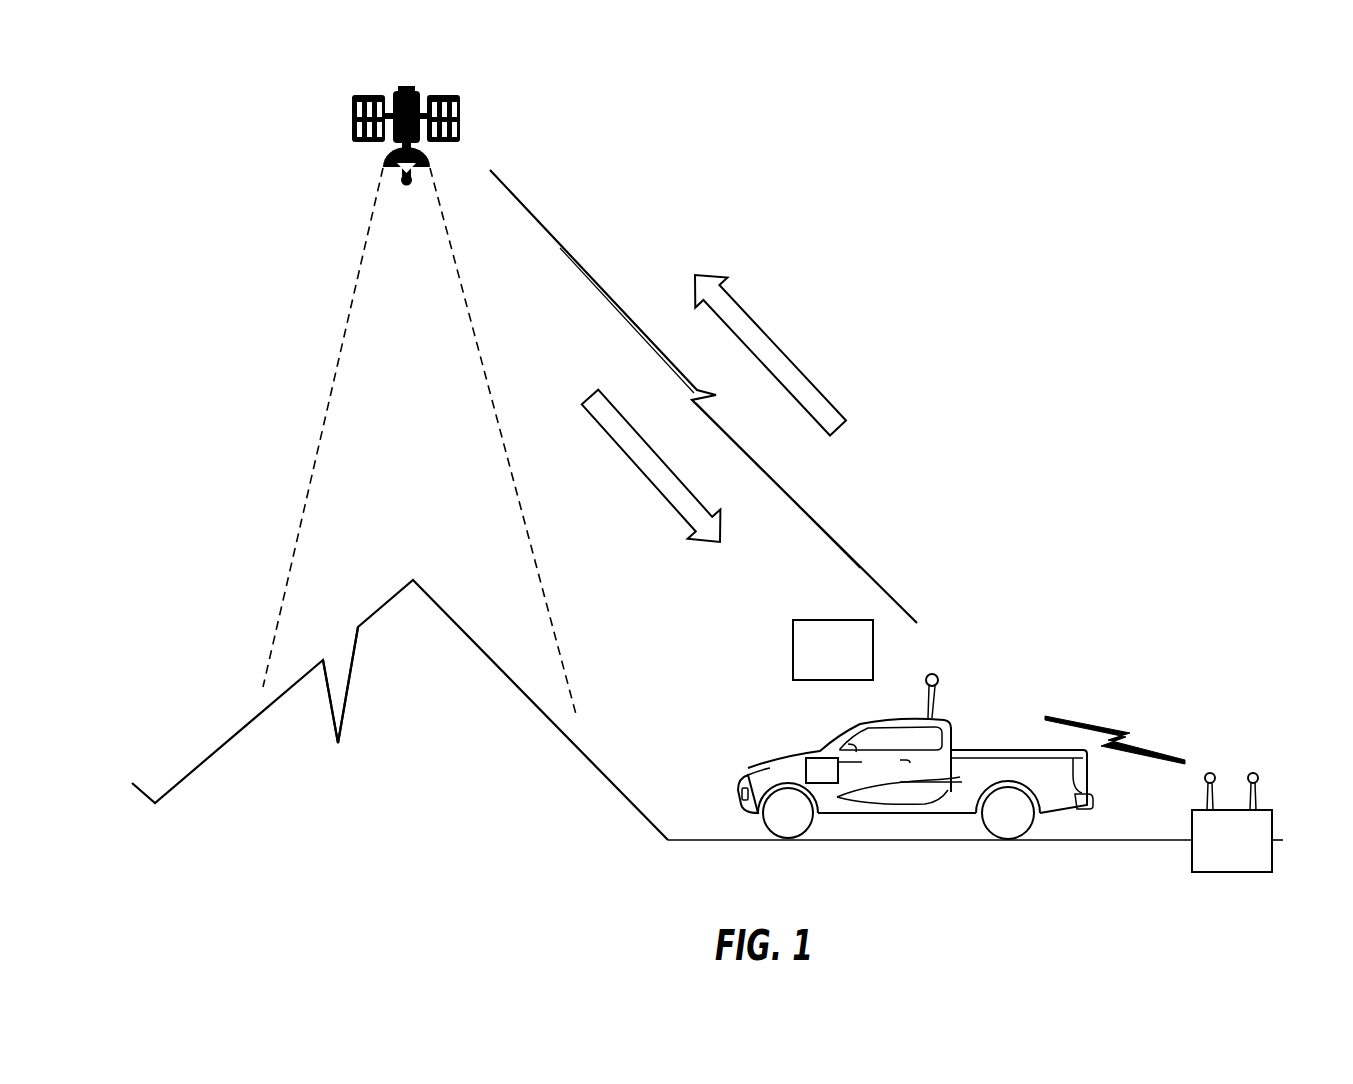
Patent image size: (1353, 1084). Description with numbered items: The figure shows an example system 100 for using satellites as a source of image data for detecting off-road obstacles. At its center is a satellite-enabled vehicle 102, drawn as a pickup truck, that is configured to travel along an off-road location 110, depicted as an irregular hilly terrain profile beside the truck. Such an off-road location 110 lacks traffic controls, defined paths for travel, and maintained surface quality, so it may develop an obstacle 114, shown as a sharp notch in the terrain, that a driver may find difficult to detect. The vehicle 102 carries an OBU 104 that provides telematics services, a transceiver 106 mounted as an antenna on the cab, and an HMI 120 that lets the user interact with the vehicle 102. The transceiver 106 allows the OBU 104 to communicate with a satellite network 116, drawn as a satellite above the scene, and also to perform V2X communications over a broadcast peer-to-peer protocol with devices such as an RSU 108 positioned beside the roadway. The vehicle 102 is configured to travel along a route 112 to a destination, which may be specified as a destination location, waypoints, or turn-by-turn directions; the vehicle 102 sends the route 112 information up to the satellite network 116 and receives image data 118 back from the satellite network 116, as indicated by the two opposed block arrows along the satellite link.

The system 100 is at (229, 68).
The vehicle 102 is at (740, 783).
The OBU 104 is at (820, 757).
The transceiver 106 is at (938, 710).
The RSU 108 is at (1216, 862).
The off-road location 110 is at (440, 605).
The route 112 is at (782, 347).
The obstacle 114 is at (328, 680).
The satellite network 116 is at (365, 137).
The image data 118 is at (640, 470).
The HMI 120 is at (890, 717).